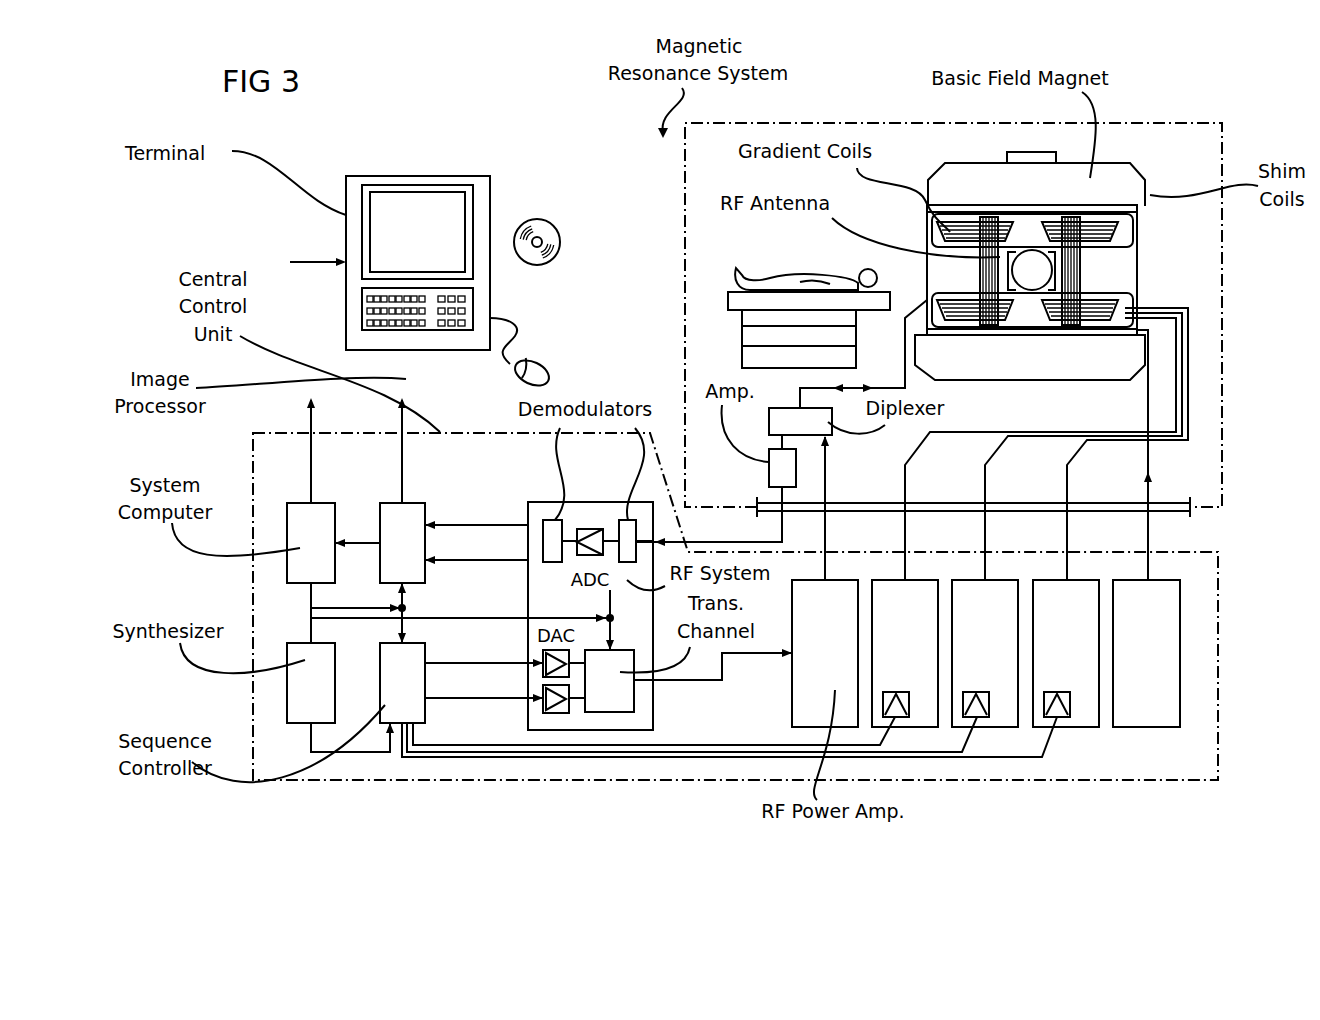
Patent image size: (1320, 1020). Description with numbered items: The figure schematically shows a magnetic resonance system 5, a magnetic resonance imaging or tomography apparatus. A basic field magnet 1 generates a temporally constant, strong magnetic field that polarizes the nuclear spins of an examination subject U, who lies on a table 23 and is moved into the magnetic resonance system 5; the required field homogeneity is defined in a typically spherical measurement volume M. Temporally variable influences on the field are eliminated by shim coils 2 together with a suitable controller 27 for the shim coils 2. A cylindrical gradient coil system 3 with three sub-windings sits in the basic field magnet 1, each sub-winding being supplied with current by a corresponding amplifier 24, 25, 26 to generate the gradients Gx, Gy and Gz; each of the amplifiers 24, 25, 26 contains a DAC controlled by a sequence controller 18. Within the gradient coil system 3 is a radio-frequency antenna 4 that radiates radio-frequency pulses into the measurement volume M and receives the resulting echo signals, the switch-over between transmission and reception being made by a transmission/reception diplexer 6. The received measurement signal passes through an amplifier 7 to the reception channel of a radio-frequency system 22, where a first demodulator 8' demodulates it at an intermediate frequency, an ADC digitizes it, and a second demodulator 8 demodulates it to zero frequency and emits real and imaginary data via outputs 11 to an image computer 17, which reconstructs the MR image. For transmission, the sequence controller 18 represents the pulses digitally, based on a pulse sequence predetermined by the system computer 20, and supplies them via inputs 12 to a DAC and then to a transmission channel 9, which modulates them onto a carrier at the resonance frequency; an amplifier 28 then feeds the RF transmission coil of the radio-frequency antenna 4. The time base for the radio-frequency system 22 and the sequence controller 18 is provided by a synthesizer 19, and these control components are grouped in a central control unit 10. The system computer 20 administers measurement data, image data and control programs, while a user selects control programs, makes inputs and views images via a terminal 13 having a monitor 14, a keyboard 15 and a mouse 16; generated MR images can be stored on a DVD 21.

The basic field magnet 1 is at (1125, 182).
The shim coils 2 is at (1120, 208).
The gradient coil system 3 is at (918, 230).
The radio-frequency antenna 4 is at (1005, 283).
The magnetic resonance system 5 is at (640, 170).
The transmission/reception diplexer 6 is at (769, 420).
The amplifier 7 is at (769, 460).
The second demodulator 8 is at (548, 513).
The first demodulator 8' is at (623, 513).
The transmission channel 9 is at (622, 650).
The central control unit 10 is at (442, 432).
The outputs 11 is at (528, 525).
The inputs 12 is at (528, 663).
The terminal 13 is at (472, 176).
The monitor 14 is at (418, 205).
The keyboard 15 is at (362, 312).
The mouse 16 is at (542, 364).
The image computer 17 is at (413, 503).
The sequence controller 18 is at (425, 661).
The synthesizer 19 is at (300, 643).
The system computer 20 is at (322, 503).
The DVD 21 is at (535, 219).
The radio-frequency system 22 is at (590, 502).
The table 23 is at (742, 335).
The amplifier 24 is at (892, 585).
The amplifier 25 is at (956, 585).
The amplifier 26 is at (1040, 585).
The controller for the shim coils 27 is at (1120, 720).
The amplifier 28 is at (810, 705).
The measurement volume M is at (1045, 263).
The examination subject U is at (818, 268).